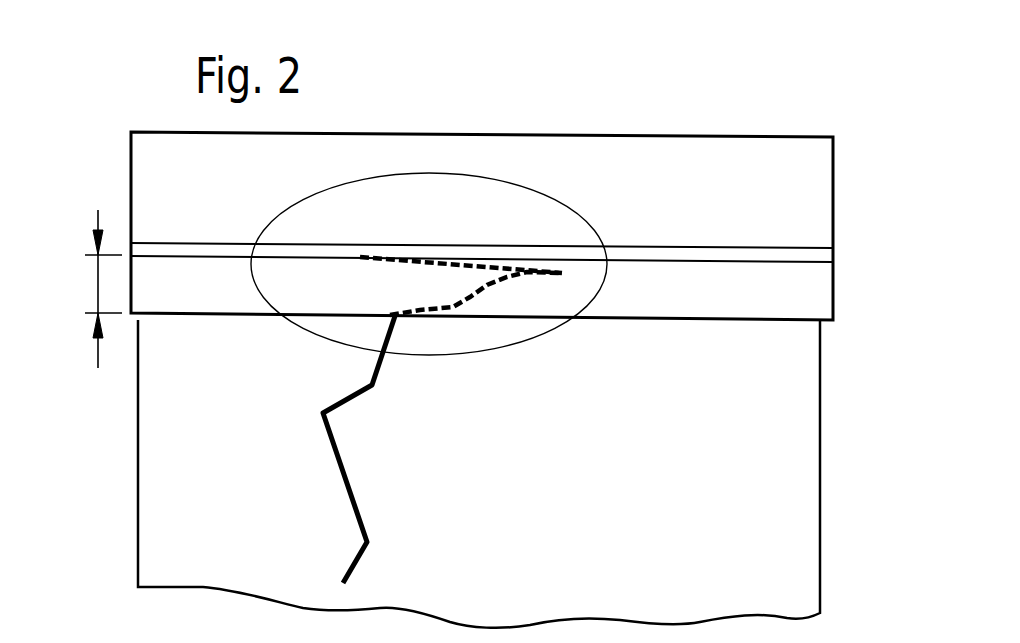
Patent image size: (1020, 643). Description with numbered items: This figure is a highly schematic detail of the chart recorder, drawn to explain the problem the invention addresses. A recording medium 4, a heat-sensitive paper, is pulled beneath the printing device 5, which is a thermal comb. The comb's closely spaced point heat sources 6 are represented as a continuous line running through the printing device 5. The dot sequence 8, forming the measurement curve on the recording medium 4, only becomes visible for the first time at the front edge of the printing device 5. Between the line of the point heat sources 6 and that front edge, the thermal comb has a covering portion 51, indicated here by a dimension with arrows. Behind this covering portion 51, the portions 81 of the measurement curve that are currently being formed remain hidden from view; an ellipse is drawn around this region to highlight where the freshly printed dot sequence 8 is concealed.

The recording medium 4 is at (790, 435).
The printing device 5 is at (807, 177).
The point heat sources 6 is at (820, 258).
The dot sequence 8 is at (357, 502).
The hidden portions of the measurement curve 81 is at (490, 287).
The covering portion 51 is at (98, 280).